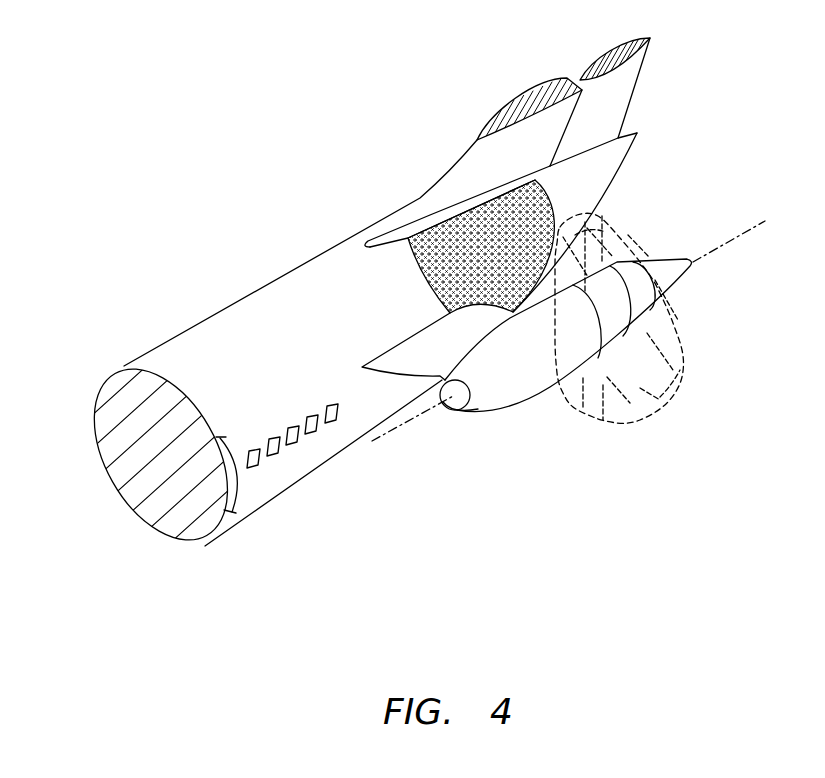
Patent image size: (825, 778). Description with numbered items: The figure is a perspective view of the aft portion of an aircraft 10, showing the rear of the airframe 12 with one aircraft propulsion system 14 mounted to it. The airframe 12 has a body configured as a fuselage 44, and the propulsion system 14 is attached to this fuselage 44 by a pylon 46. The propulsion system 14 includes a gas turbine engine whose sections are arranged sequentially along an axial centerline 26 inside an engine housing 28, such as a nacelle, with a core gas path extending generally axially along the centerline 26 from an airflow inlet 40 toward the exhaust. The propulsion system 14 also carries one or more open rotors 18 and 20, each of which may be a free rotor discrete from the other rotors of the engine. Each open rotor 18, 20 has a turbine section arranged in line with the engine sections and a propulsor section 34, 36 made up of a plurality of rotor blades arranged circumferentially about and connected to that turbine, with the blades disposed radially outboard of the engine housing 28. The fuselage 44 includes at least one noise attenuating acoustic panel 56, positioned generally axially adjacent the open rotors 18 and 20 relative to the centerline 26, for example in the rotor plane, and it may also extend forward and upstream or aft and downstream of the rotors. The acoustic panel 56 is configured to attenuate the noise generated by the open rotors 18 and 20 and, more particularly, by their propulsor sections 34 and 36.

The aircraft 10 is at (160, 178).
The airframe 12 is at (265, 519).
The aircraft propulsion system 14 is at (519, 430).
The open rotor 18 is at (634, 430).
The open rotor 20 is at (680, 410).
The axial centerline 26 is at (751, 229).
The engine housing 28 is at (478, 408).
The propulsor section 34 is at (606, 396).
The propulsor section 36 is at (673, 370).
The airflow inlet 40 is at (455, 400).
The fuselage 44 is at (305, 447).
The pylon 46 is at (420, 353).
The noise attenuating acoustic panel 56 is at (541, 204).